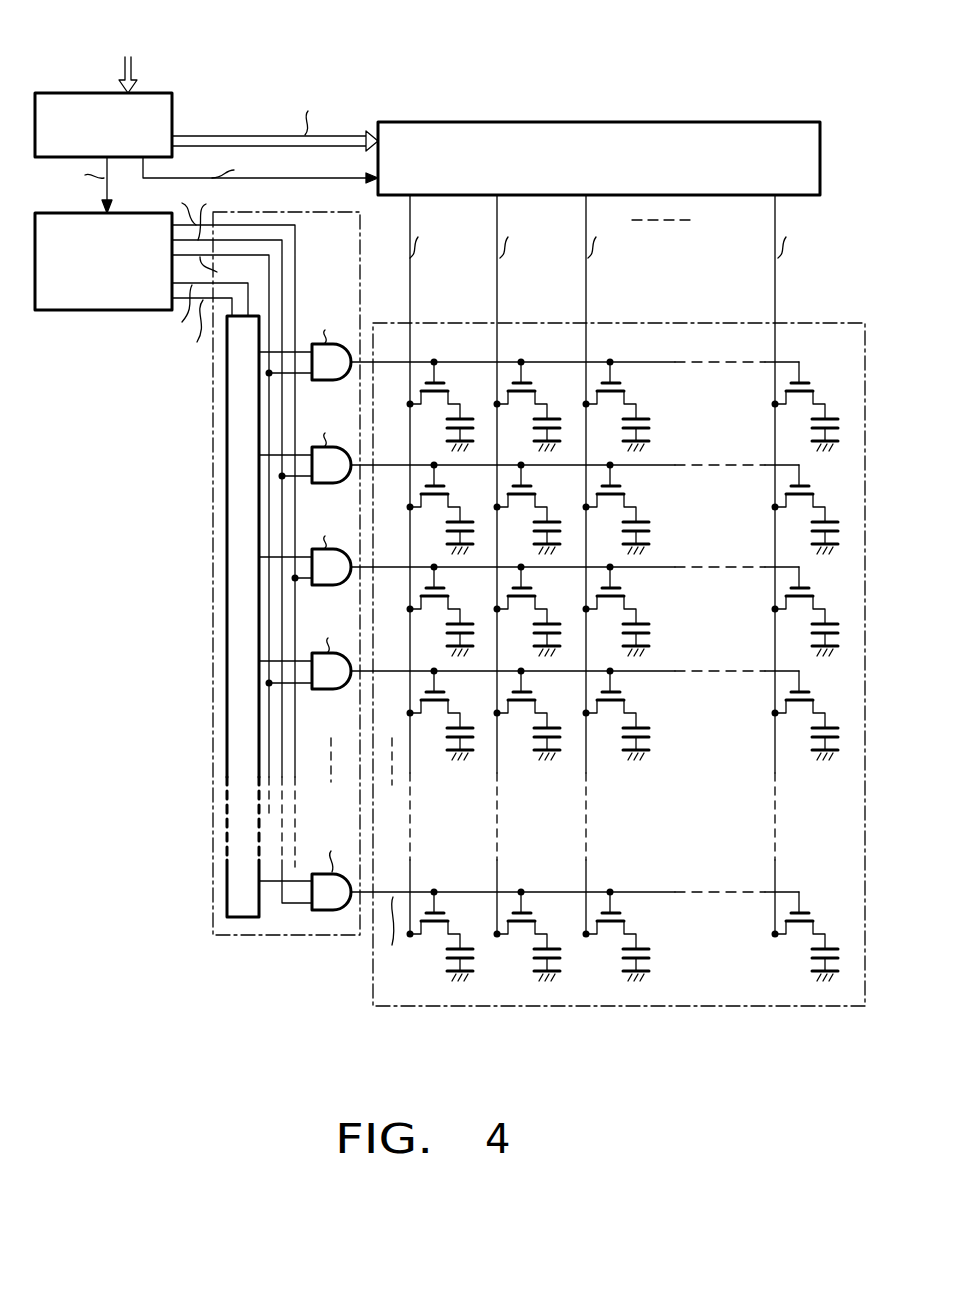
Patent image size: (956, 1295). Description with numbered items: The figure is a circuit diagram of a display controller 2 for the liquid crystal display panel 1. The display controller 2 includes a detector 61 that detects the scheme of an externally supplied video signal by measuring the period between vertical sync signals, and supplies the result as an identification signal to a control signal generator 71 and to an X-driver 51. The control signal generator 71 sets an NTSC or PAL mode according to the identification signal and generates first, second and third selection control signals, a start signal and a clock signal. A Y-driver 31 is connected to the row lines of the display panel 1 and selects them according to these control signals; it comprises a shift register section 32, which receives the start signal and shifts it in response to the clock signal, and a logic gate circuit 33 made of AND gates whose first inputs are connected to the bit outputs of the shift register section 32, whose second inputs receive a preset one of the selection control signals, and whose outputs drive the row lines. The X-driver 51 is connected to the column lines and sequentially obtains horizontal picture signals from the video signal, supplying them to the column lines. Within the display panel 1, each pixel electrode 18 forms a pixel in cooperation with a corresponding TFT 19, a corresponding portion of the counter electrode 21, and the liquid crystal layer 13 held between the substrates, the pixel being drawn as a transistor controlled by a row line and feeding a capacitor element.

The display controller 2 is at (440, 90).
The detector 61 is at (63, 93).
The control signal generator 71 is at (124, 312).
The X-driver 51 is at (745, 122).
The liquid crystal display panel 1 is at (812, 322).
The Y-driver 31 is at (287, 937).
The shift register section 32 is at (244, 919).
The logic gate circuit 33 is at (326, 918).
The pixel electrode 18 is at (644, 389).
The TFT 19 is at (624, 384).
The liquid crystal layer 13 is at (651, 422).
The counter electrode 21 is at (651, 434).